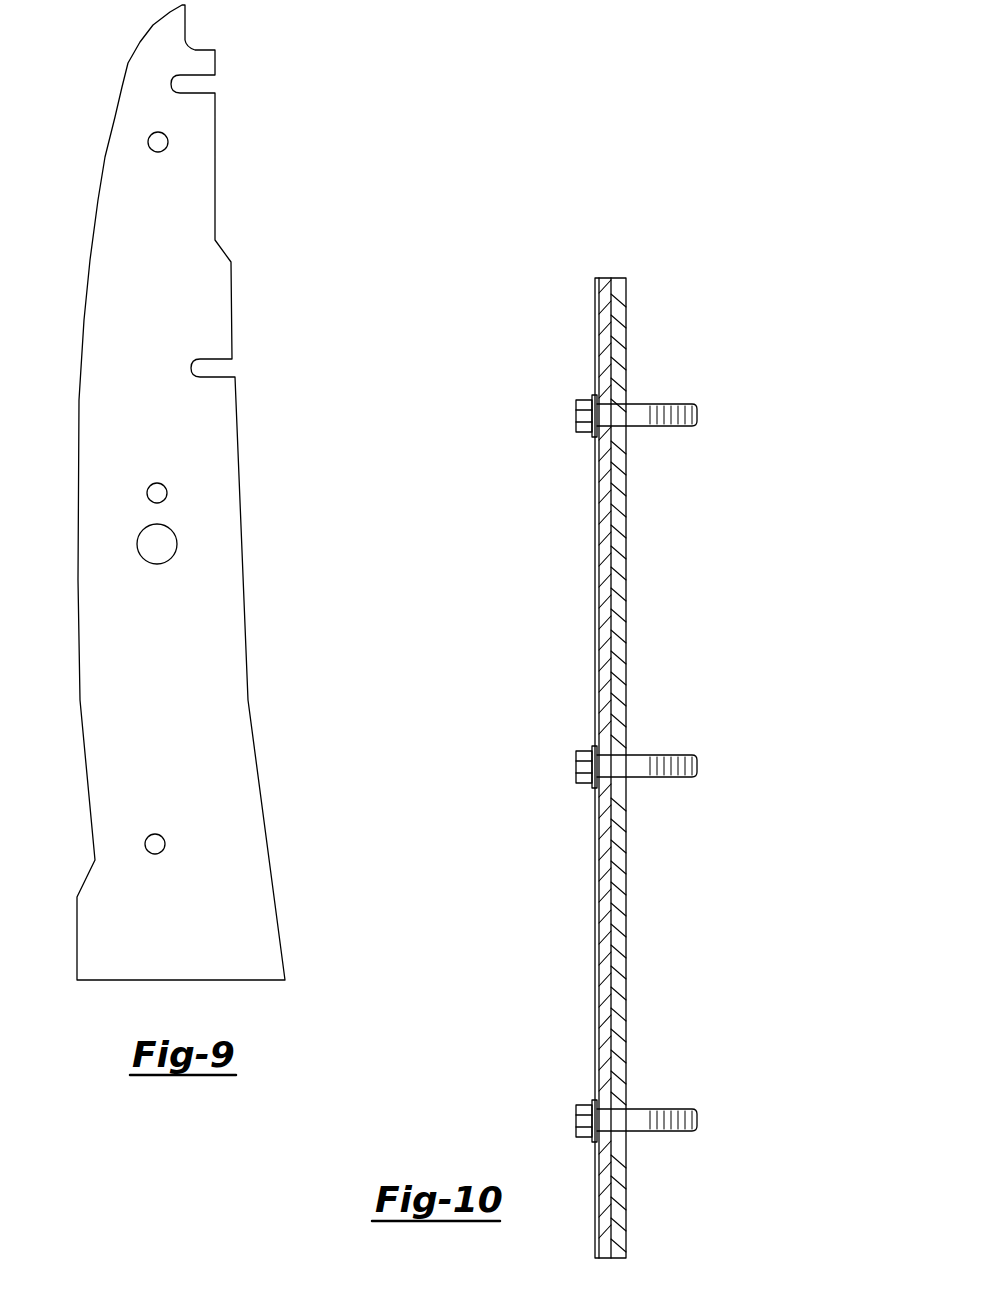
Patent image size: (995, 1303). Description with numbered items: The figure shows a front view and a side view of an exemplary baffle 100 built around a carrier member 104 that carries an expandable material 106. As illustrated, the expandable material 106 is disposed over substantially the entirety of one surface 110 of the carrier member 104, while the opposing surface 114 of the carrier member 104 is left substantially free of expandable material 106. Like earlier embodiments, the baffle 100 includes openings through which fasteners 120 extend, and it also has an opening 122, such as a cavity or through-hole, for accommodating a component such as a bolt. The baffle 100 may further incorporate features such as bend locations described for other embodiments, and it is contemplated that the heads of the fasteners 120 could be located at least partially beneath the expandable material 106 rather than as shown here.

In FIG. 9, the baffle 100 is at (292, 100).
In FIG. 10, the baffle 100 is at (703, 330).
In FIG. 10, the carrier member 104 is at (627, 495).
In FIG. 9, the expandable material 106 is at (207, 640).
In FIG. 10, the expandable material 106 is at (596, 676).
In FIG. 10, the surface 110 is at (606, 927).
In FIG. 10, the opposing surface 114 is at (629, 690).
In FIG. 9, the fasteners 120 is at (168, 142).
In FIG. 9, the opening 122 is at (177, 544).